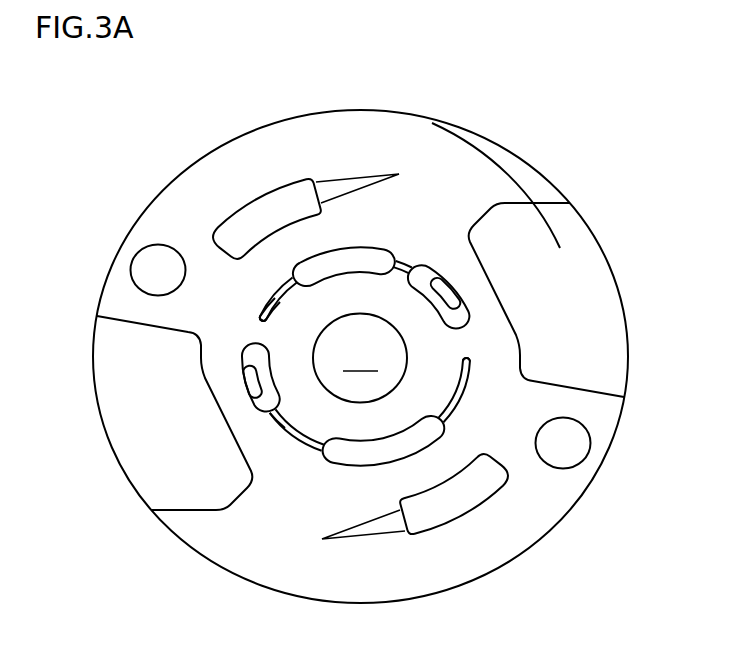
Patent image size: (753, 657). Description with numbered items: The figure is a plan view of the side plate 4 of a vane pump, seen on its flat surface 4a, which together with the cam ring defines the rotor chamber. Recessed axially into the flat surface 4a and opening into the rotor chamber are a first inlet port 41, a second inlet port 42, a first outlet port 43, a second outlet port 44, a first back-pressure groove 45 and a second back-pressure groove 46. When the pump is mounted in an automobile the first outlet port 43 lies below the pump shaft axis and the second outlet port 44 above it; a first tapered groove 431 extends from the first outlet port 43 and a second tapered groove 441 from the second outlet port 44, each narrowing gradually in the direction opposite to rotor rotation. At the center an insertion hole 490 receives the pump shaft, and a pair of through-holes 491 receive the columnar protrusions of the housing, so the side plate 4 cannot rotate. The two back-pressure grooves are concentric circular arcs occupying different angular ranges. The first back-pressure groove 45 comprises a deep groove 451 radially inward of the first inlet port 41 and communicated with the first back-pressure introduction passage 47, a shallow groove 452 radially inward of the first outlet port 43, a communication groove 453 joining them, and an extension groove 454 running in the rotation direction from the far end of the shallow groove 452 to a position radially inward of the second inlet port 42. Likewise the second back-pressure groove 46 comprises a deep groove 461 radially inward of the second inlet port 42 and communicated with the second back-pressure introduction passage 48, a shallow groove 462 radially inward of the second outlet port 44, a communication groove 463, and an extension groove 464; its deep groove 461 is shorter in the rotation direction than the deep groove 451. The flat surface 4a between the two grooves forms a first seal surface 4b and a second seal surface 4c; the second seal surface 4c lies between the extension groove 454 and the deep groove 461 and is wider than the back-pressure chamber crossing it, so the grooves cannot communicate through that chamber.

The side plate 4 is at (243, 94).
The flat surface 4a is at (430, 135).
The first seal surface 4b is at (262, 333).
The second seal surface 4c is at (465, 338).
The first inlet port 41 is at (140, 452).
The second inlet port 42 is at (560, 248).
The first outlet port 43 is at (464, 493).
The second outlet port 44 is at (302, 197).
The first back-pressure groove 45 is at (226, 376).
The second back-pressure groove 46 is at (284, 251).
The first back-pressure introduction passage 47 is at (252, 387).
The second back-pressure introduction passage 48 is at (457, 300).
The first tapered groove 431 is at (371, 531).
The second tapered groove 441 is at (333, 190).
The deep groove 451 is at (267, 410).
The shallow groove 452 is at (333, 453).
The communication groove 453 is at (300, 443).
The extension groove 454 is at (470, 388).
The deep groove 461 is at (427, 277).
The shallow groove 462 is at (377, 255).
The communication groove 463 is at (410, 267).
The extension groove 464 is at (262, 308).
The insertion hole 490 is at (360, 358).
The through-holes 491 is at (155, 266).